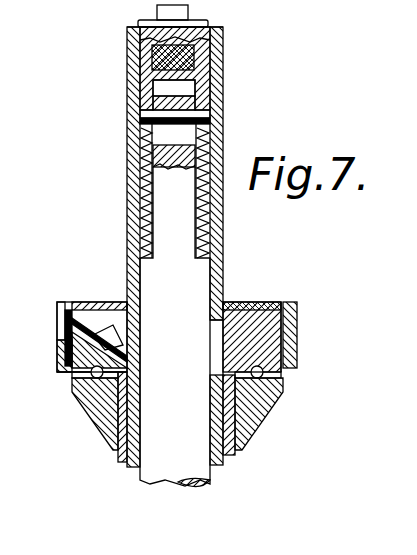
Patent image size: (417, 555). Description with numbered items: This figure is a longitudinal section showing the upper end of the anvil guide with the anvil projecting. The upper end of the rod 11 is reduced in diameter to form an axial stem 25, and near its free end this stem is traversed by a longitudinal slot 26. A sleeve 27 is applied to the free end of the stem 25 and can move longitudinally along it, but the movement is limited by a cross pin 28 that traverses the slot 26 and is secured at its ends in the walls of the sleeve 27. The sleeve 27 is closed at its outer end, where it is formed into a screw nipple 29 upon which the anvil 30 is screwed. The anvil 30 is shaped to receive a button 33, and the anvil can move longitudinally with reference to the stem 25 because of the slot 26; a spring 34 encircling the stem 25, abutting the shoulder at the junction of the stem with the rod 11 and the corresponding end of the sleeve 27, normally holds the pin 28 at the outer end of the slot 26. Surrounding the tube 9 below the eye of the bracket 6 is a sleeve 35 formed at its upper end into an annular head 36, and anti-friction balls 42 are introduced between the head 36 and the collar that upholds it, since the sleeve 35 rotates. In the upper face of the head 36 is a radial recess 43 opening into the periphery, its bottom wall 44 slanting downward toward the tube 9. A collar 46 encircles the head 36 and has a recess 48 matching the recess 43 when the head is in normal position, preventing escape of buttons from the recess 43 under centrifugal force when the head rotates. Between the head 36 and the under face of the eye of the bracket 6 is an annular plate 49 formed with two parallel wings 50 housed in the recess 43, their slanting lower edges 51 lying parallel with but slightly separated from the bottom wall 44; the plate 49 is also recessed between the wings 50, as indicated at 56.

The bracket 6 is at (5, 196).
The tube 9 is at (264, 221).
The rod 11 is at (187, 296).
The axial stem 25 is at (203, 153).
The longitudinal slot 26 is at (177, 137).
The sleeve 27 is at (220, 78).
The cross pin 28 is at (152, 121).
The screw nipple 29 is at (153, 58).
The anvil 30 is at (130, 31).
The button 33 is at (190, 12).
The spring 34 is at (130, 210).
The sleeve 35 is at (256, 438).
The annular head 36 is at (298, 322).
The anti-friction balls 42 is at (360, 363).
The radial recess 43 is at (67, 345).
The bottom wall 44 is at (64, 435).
The collar 46 is at (292, 302).
The recess 48 is at (62, 316).
The plate 49 is at (92, 302).
The parallel wings 50 is at (133, 300).
The slanting lower edges 51 is at (68, 336).
The recess 56 is at (78, 302).